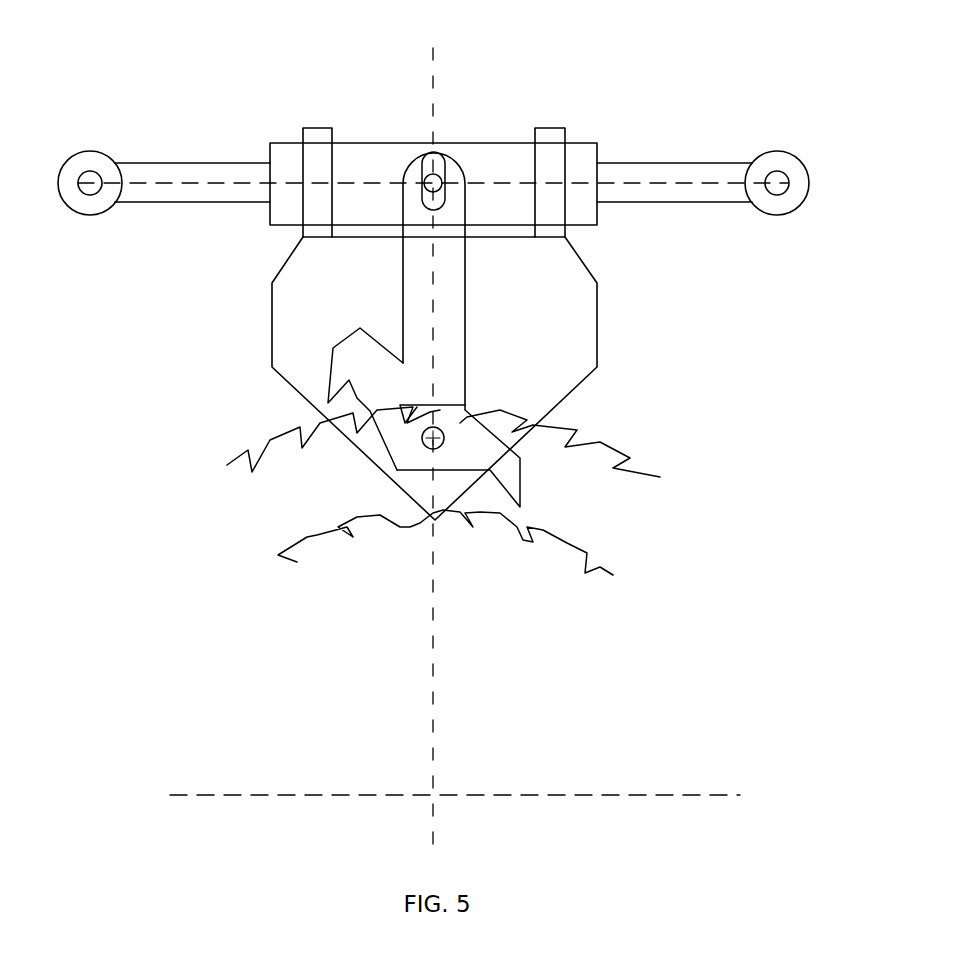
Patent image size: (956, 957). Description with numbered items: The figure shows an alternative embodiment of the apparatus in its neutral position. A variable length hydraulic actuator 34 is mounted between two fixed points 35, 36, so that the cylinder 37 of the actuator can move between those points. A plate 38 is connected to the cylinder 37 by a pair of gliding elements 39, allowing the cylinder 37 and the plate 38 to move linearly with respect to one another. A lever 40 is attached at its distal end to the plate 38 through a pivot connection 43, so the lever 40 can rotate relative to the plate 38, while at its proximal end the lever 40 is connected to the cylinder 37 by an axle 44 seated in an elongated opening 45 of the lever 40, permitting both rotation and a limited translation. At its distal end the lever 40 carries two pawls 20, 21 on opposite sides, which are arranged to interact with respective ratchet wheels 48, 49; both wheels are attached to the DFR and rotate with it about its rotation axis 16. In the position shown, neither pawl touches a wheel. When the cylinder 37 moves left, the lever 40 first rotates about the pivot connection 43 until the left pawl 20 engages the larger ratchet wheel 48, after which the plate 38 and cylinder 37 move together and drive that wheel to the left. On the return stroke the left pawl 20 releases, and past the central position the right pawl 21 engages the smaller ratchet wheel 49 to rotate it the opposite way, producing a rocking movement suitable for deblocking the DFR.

The rotation axis 16 is at (433, 817).
The left pawl 20 is at (330, 383).
The right pawl 21 is at (523, 487).
The variable length hydraulic actuator 34 is at (262, 152).
The fixed point 35 is at (92, 178).
The fixed point 36 is at (773, 176).
The cylinder 37 is at (372, 160).
The plate 38 is at (558, 302).
The gliding elements 39 is at (323, 148).
The lever 40 is at (423, 318).
The pivot connection 43 is at (424, 442).
The axle 44 is at (440, 180).
The elongated opening 45 is at (420, 155).
The larger ratchet wheel 48 is at (290, 462).
The smaller ratchet wheel 49 is at (520, 565).